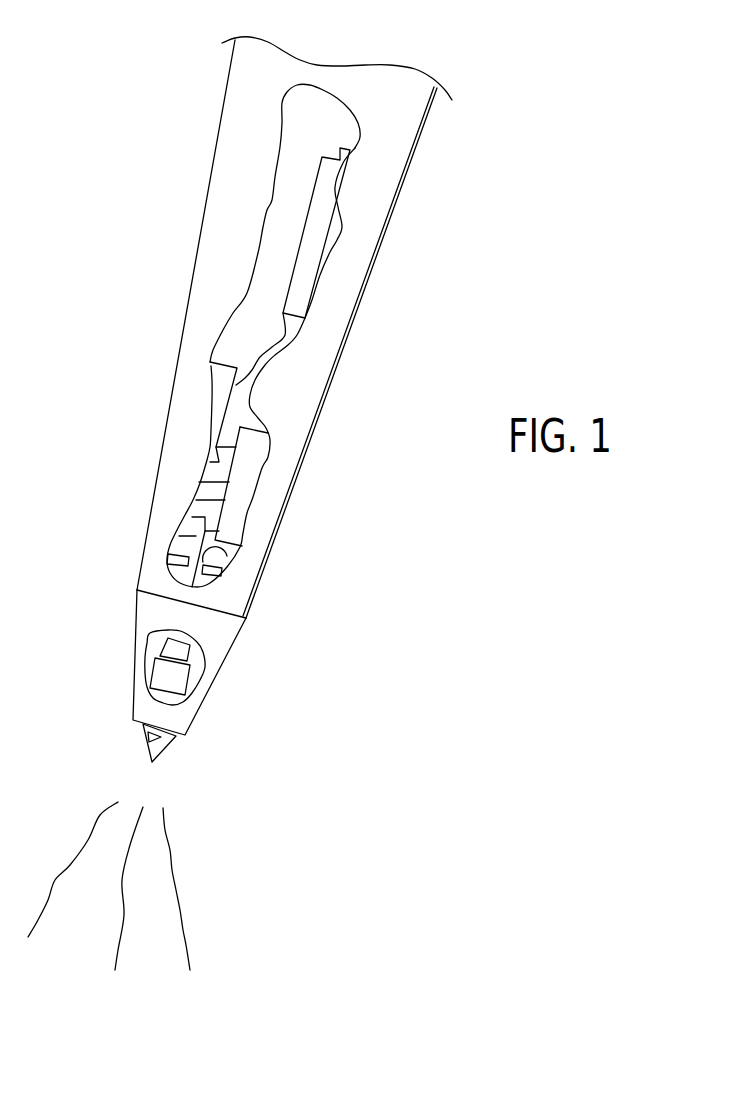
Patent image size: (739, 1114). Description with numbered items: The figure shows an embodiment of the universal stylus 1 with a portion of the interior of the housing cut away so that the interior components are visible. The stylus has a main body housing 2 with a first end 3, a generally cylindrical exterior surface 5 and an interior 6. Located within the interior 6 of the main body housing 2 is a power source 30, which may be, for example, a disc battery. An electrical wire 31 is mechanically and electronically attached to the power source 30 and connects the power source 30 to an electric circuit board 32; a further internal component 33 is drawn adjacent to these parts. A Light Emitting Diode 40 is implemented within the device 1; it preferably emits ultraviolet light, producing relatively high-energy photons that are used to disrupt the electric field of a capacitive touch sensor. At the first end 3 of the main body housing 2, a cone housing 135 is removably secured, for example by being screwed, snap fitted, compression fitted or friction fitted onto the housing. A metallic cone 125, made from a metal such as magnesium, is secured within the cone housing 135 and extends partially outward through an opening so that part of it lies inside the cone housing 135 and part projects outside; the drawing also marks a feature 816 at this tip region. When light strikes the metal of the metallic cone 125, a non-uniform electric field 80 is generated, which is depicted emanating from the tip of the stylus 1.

The universal stylus 1 is at (245, 152).
The main body housing 2 is at (382, 170).
The first end 3 is at (233, 613).
The generally cylindrical exterior surface 5 is at (230, 205).
The interior 6 is at (253, 330).
The power source 30 is at (317, 237).
The electrical wire 31 is at (288, 345).
The electric circuit board 32 is at (218, 383).
The drive mechanism 33 is at (222, 563).
The Light Emitting Diode (LED) 40 is at (178, 677).
The non-uniform electric field 80 is at (190, 955).
The metallic cone 125 is at (167, 743).
The cone housing 135 is at (143, 606).
The outlet 816 is at (148, 738).